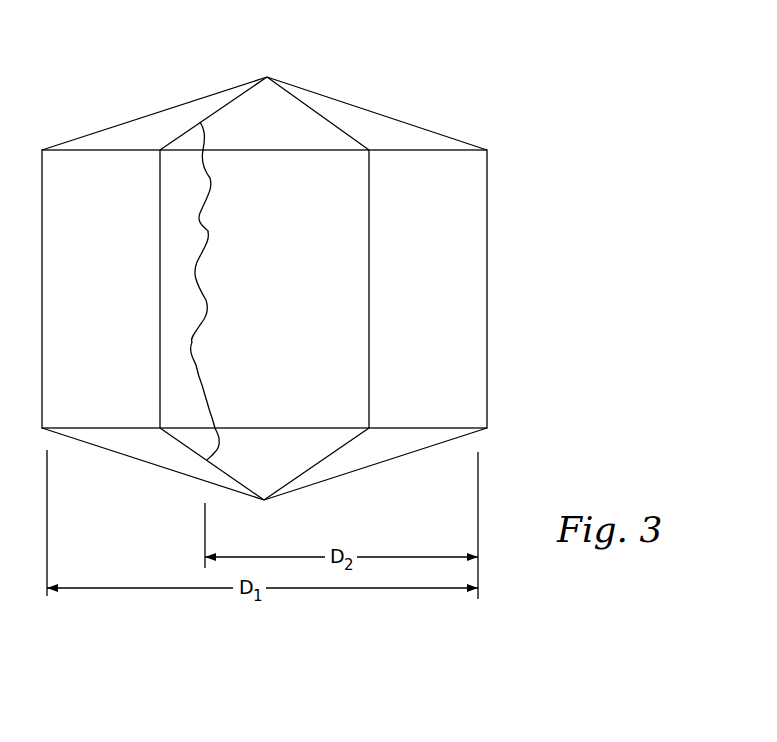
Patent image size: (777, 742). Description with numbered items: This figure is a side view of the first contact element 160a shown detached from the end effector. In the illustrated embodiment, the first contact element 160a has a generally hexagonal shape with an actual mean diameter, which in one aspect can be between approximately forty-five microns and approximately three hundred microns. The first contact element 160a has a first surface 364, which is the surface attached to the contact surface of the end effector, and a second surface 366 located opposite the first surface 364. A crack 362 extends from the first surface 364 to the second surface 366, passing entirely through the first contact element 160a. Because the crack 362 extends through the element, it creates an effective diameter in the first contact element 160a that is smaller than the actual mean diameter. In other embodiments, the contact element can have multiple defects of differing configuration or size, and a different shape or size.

The first contact element 160a is at (326, 270).
The first surface 364 is at (296, 71).
The crack 362 is at (202, 251).
The second surface 366 is at (275, 507).